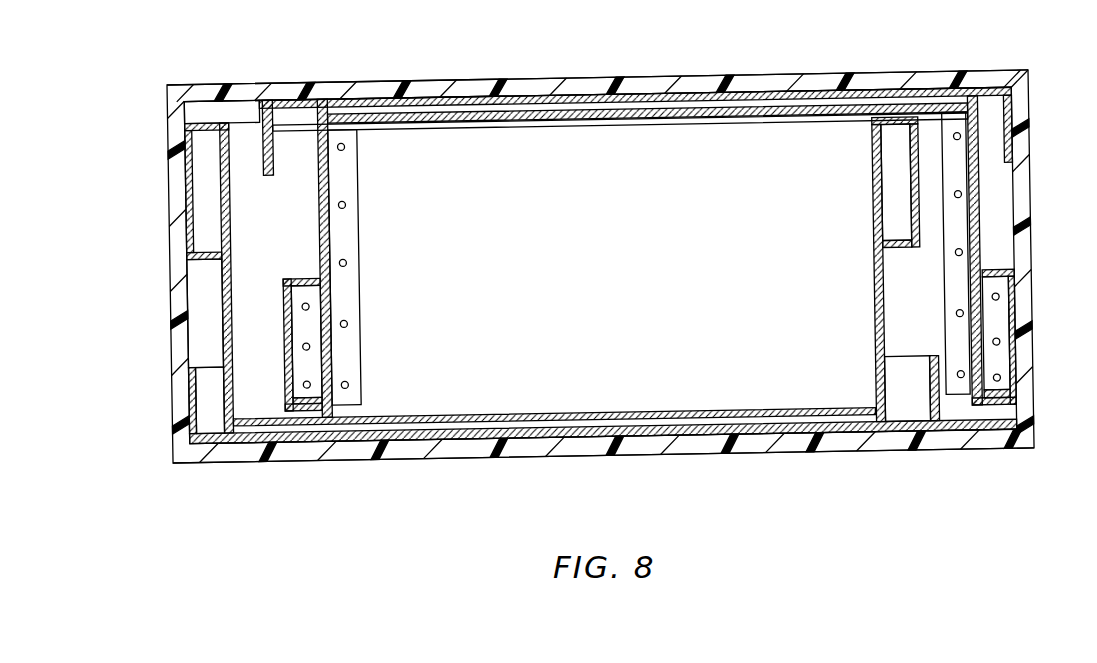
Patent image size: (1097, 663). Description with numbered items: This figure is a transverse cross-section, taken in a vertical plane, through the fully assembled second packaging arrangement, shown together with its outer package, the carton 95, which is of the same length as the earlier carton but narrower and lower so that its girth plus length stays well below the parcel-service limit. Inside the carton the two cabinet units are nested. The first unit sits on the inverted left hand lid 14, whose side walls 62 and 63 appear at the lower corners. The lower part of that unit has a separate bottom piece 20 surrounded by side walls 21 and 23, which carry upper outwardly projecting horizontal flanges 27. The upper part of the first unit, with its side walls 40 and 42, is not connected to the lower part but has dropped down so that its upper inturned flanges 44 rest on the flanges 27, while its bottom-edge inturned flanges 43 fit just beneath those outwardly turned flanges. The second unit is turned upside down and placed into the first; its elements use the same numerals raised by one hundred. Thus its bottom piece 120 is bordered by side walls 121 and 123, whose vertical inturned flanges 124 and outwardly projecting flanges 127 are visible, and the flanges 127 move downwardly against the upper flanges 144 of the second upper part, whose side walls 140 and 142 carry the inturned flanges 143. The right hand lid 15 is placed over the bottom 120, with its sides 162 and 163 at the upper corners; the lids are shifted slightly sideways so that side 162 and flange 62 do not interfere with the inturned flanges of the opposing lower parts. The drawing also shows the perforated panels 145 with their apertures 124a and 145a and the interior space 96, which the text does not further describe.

The left hand lid 14 is at (540, 440).
The right hand lid 15 is at (524, 96).
The bottom piece 20 is at (482, 410).
The side wall 21 is at (226, 312).
The side wall 23 is at (873, 272).
The upper outwardly projecting horizontal flange 27 is at (197, 152).
The side wall 40 is at (195, 185).
The side wall 42 is at (905, 178).
The inturned flange 43 is at (230, 272).
The upper inturned flange 44 is at (203, 122).
The side wall of lid 62 is at (914, 373).
The side of lid 63 is at (205, 375).
The carton 95 is at (420, 84).
The interior compartment 96 is at (610, 290).
The bottom piece 120 is at (635, 122).
The side wall 121 is at (982, 240).
The side wall 123 is at (320, 214).
The vertical inturned flange 124 is at (358, 190).
The aperture 124a is at (348, 150).
The upper outwardly projecting horizontal flange 127 is at (1000, 384).
The side wall 140 is at (1013, 360).
The side wall 142 is at (285, 330).
The inturned flange 143 is at (1000, 270).
The upper inturned flange 144 is at (996, 407).
The perforated plate 145 is at (318, 337).
The aperture 145a is at (308, 306).
The side wall of lid 162 is at (272, 164).
The side of lid 163 is at (1010, 150).